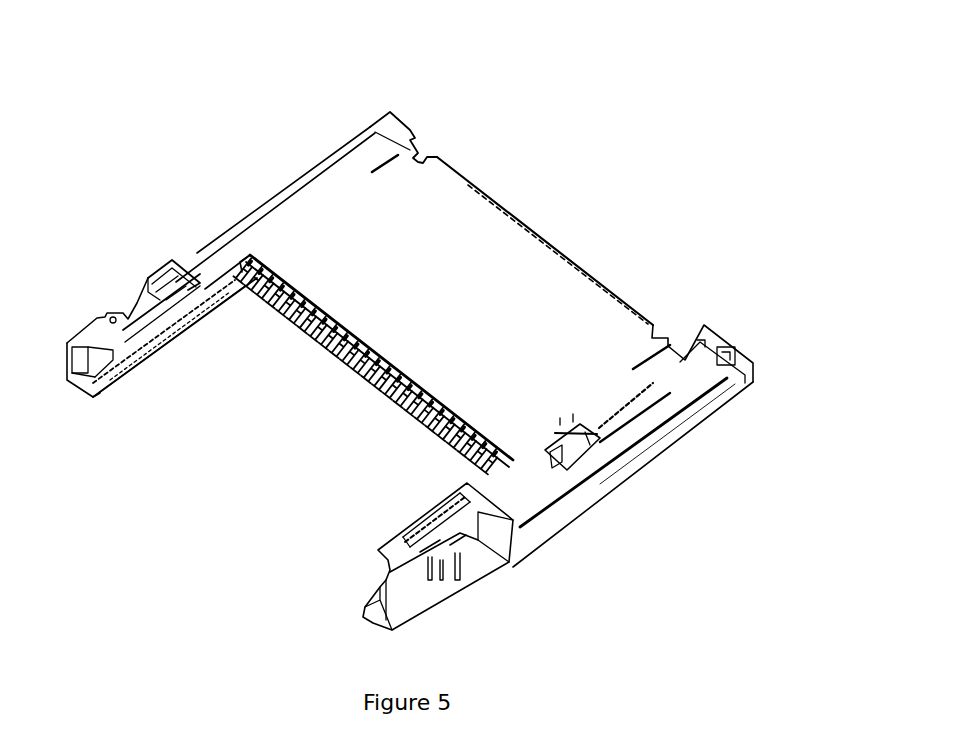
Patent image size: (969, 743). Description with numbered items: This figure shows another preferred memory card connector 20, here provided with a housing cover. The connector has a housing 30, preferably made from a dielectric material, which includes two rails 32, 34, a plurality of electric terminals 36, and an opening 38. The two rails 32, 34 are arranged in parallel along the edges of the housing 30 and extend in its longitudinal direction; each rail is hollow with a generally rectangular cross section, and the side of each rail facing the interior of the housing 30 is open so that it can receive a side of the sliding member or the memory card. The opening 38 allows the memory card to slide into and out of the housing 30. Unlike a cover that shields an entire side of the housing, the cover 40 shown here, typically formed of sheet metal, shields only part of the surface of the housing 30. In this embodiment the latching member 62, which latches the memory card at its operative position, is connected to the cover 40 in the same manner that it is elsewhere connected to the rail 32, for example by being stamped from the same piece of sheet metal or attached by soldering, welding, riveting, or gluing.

The memory card connector 20 is at (607, 153).
The housing 30 is at (157, 283).
The rail 32 is at (470, 537).
The rail 34 is at (183, 330).
The electric terminals 36 is at (383, 410).
The opening 38 is at (250, 492).
The cover 40 is at (593, 323).
The latching member 62 is at (603, 443).